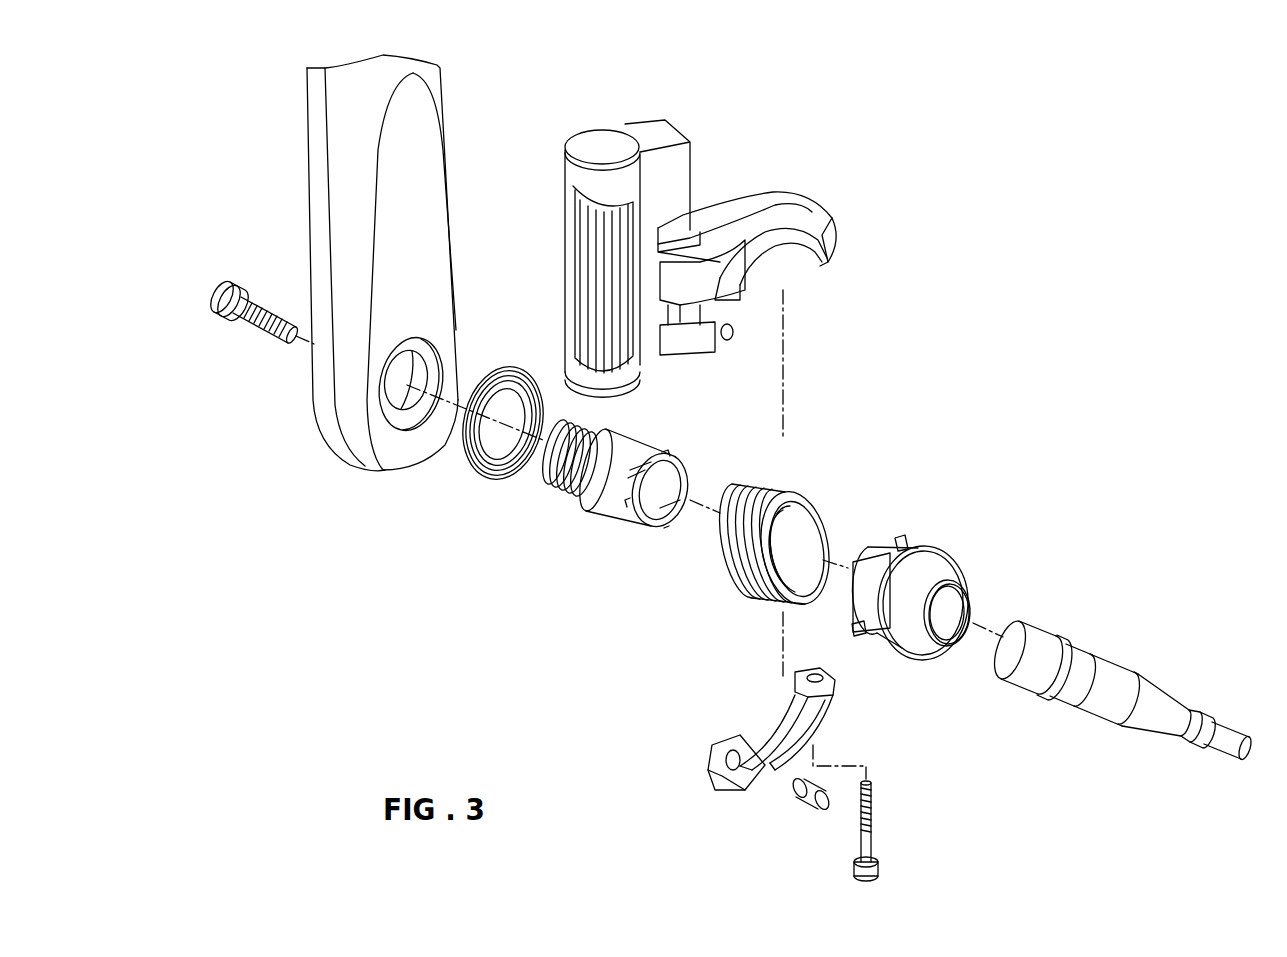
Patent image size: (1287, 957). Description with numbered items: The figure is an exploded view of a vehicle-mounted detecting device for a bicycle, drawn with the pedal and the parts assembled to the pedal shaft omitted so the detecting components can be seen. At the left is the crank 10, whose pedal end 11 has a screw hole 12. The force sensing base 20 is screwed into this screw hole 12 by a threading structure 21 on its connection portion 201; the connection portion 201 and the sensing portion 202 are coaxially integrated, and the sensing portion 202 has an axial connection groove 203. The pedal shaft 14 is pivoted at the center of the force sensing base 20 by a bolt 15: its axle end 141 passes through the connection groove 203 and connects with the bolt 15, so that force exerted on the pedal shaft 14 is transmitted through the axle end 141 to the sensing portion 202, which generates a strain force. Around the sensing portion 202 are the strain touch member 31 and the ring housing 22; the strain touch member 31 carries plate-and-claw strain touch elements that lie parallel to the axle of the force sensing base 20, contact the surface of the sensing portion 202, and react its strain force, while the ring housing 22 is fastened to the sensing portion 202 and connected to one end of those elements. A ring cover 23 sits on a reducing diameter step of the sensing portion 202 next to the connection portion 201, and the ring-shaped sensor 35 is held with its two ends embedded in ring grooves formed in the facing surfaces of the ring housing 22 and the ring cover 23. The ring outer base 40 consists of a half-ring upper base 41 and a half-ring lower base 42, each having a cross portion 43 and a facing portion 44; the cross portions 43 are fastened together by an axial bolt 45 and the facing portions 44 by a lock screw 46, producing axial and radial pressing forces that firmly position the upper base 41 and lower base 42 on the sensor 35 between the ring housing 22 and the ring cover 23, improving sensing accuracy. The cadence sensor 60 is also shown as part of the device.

The crank 10 is at (318, 173).
The pedal end 11 is at (353, 430).
The screw hole 12 is at (407, 372).
The pedal shaft 14 is at (1113, 678).
The axle end 141 is at (1043, 625).
The bolt 15 is at (217, 293).
The force sensing base 20 is at (507, 572).
The connection portion 201 is at (560, 482).
The sensing portion 202 is at (608, 518).
The connection groove 203 is at (657, 495).
The threading structure 21 is at (590, 428).
The ring housing 22 is at (937, 572).
The ring cover 23 is at (470, 465).
The strain touch member 31 is at (908, 538).
The sensor 35 is at (820, 507).
The ring outer base 40 is at (805, 187).
The upper base 41 is at (770, 197).
The lower base 42 is at (763, 740).
The cross portion 43 is at (727, 323).
The facing portion 44 is at (808, 263).
The axial bolt 45 is at (808, 800).
The lock screw 46 is at (877, 837).
The cadence sensor 60 is at (957, 643).